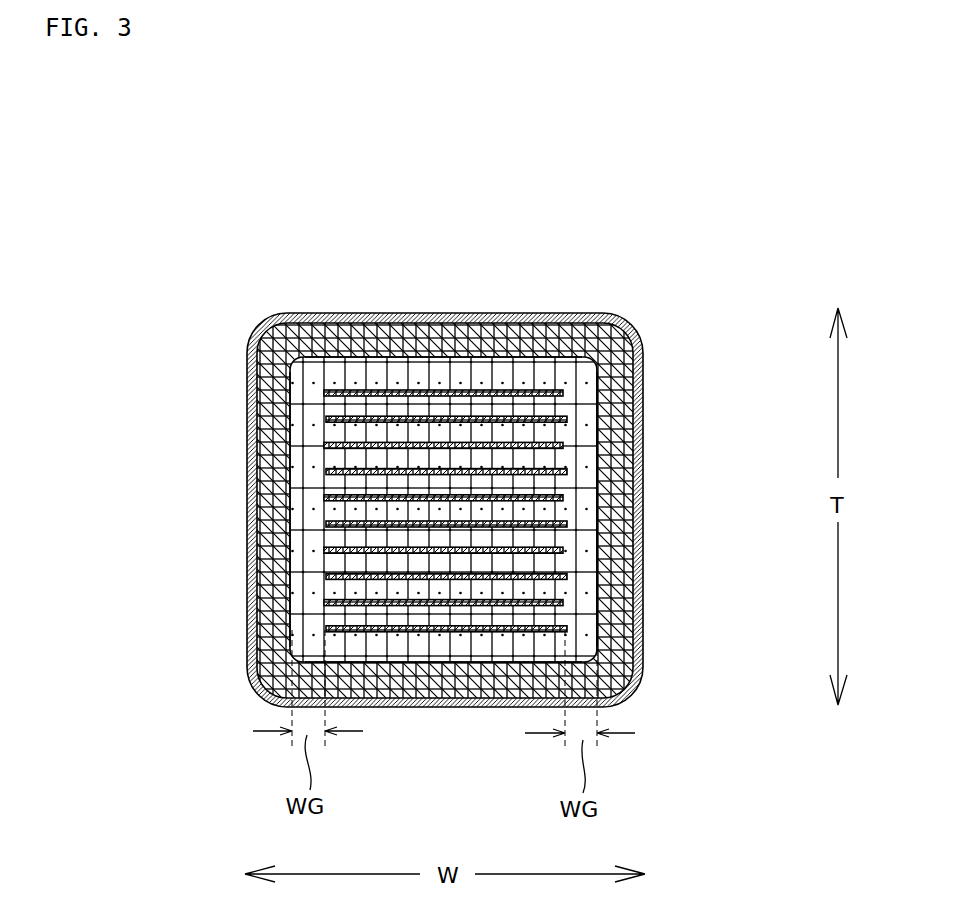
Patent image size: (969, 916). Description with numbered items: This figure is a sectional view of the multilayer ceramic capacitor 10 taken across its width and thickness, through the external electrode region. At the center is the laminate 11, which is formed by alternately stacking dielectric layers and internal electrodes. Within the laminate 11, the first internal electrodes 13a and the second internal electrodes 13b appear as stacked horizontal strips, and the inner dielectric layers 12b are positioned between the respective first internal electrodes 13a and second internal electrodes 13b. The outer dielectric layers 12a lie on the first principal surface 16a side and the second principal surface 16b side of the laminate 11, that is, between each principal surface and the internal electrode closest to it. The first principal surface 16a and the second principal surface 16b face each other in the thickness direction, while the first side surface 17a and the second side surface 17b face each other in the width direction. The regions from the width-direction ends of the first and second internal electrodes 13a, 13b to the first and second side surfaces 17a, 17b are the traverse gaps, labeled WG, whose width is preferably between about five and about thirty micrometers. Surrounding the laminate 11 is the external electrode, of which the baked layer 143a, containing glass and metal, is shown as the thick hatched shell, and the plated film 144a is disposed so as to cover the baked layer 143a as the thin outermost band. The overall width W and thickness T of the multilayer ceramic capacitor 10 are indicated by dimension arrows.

The multilayer ceramic capacitor 10 is at (607, 184).
The laminate 11 is at (513, 663).
The outer dielectric layers 12a is at (415, 372).
The inner dielectric layers 12b is at (473, 405).
The first internal electrodes 13a is at (545, 443).
The second internal electrodes 13b is at (498, 577).
The first principal surface 16a is at (368, 335).
The second principal surface 16b is at (397, 662).
The first side surface 17a is at (277, 416).
The second side surface 17b is at (612, 408).
The baked layer 143a is at (257, 545).
The plated film 144a is at (247, 496).